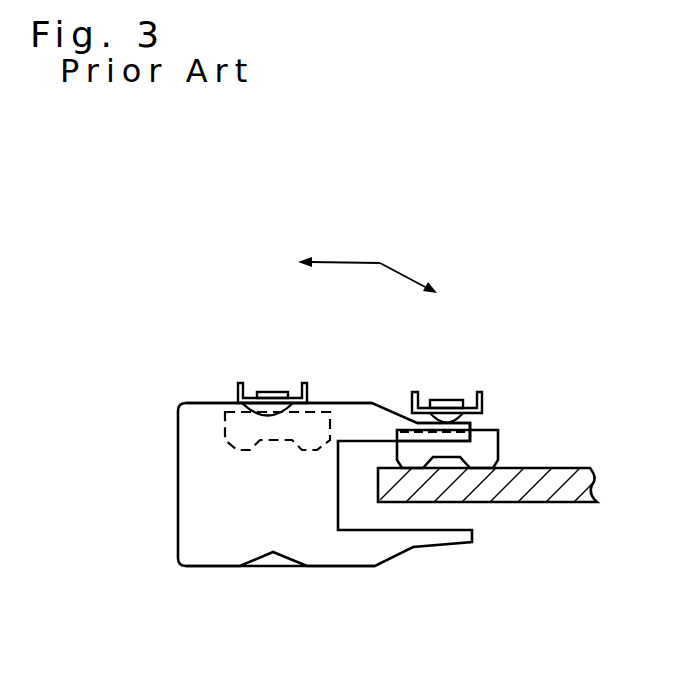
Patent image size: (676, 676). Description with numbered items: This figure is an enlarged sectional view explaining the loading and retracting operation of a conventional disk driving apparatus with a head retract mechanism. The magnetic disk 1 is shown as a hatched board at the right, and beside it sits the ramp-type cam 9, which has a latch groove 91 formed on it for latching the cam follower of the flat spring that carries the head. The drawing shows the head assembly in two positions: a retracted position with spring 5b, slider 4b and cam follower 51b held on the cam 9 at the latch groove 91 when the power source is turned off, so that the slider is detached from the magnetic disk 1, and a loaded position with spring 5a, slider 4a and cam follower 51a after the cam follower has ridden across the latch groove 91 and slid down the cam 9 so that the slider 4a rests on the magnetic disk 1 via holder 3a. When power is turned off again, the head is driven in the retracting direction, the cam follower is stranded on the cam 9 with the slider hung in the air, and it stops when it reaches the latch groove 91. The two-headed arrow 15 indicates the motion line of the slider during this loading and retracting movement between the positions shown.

The magnetic disk 1 is at (555, 492).
The sensor holder 3a is at (492, 428).
The sensor mount block 4a is at (500, 443).
The sensor mount block 4b is at (238, 415).
The optical sensor 5a is at (485, 402).
The optical sensor 5b is at (238, 388).
The sensing element 51a is at (450, 400).
The sensing element 51b is at (275, 392).
The ramp-type cam 9 is at (196, 555).
The latch groove 91 is at (316, 402).
The motion line arrow 15 is at (380, 263).